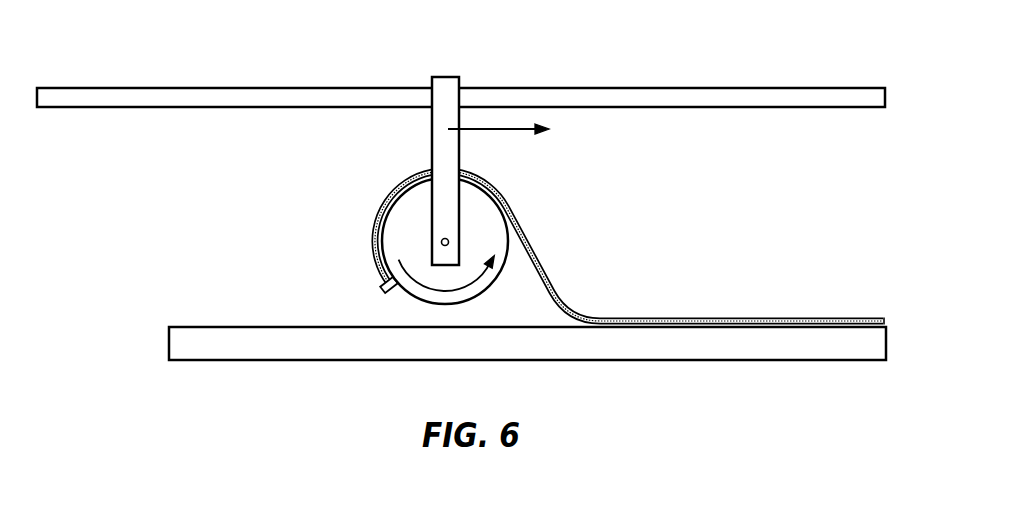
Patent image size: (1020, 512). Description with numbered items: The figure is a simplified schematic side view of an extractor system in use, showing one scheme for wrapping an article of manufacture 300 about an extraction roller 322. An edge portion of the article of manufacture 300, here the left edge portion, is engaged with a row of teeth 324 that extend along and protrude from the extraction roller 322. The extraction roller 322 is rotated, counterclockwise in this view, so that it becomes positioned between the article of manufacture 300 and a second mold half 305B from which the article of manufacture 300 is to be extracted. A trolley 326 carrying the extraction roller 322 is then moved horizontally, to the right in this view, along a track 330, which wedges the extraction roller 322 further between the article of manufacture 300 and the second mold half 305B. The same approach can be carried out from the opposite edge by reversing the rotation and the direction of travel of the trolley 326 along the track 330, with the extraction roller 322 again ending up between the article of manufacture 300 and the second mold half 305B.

The article of manufacture 300 is at (545, 278).
The second mold half 305B is at (210, 338).
The extraction roller 322 is at (485, 220).
The row of teeth 324 is at (382, 285).
The trolley 326 is at (445, 148).
The track 330 is at (693, 97).